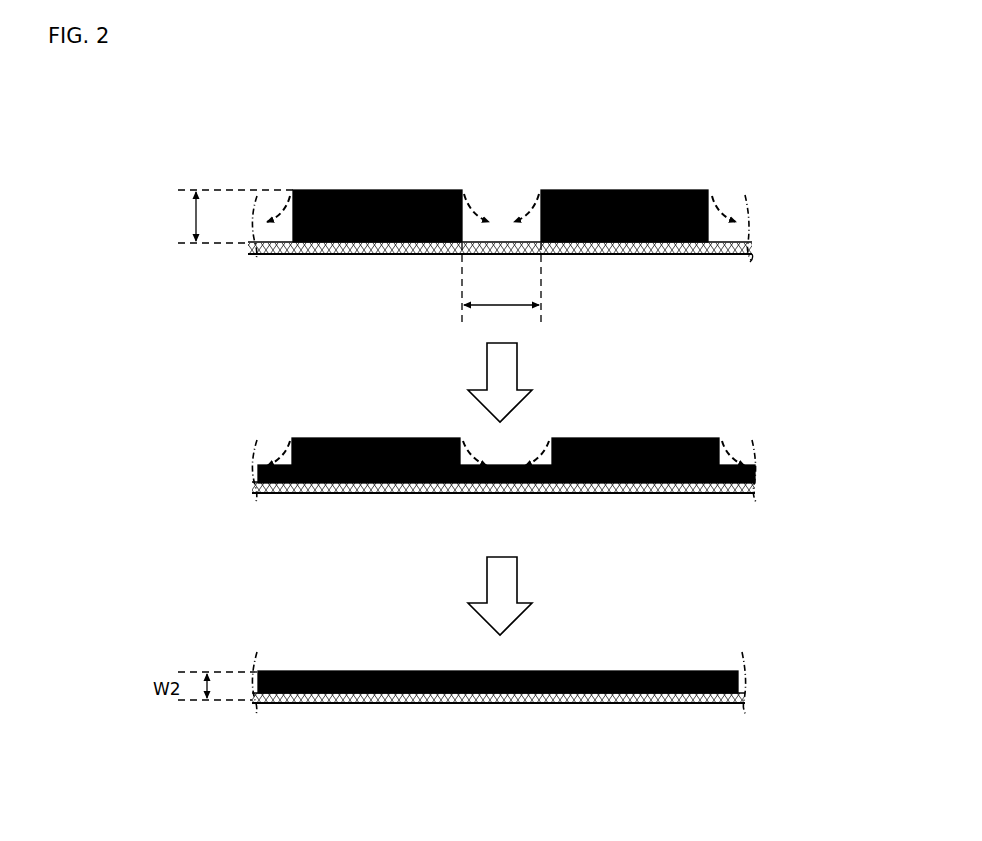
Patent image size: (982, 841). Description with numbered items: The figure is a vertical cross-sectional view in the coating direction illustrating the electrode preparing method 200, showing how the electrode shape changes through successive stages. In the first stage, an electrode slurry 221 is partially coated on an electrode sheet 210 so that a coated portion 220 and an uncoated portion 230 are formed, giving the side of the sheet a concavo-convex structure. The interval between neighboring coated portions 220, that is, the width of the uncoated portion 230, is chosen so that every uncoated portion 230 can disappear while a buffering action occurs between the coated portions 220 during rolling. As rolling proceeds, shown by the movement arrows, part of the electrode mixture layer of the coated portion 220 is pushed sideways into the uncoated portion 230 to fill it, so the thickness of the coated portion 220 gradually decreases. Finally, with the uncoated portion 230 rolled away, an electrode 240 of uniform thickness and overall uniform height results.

The electrode preparing method 200 is at (98, 139).
The electrode sheet 210 is at (337, 243).
The coated portion 220 is at (624, 187).
The electrode slurry 221 is at (708, 191).
The uncoated portion 230 is at (500, 198).
The electrode 240 is at (738, 671).